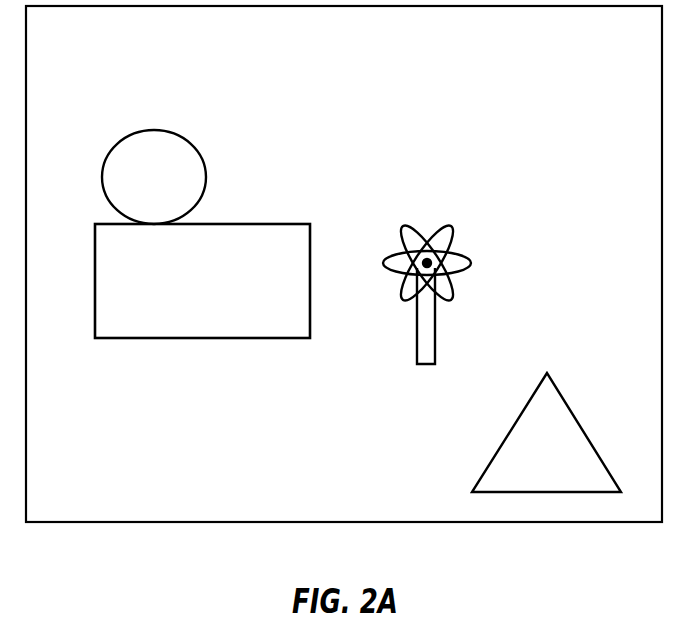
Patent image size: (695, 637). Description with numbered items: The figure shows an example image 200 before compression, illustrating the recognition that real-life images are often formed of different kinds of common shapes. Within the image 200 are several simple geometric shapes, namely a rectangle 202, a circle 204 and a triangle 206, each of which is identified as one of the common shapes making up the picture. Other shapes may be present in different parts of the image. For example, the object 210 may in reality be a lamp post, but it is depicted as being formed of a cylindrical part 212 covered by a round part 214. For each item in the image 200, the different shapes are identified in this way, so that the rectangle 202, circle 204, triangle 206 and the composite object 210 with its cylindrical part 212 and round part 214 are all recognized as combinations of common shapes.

The image 200 is at (367, 60).
The rectangle 202 is at (142, 339).
The circle 204 is at (155, 129).
The triangle 206 is at (505, 433).
The object 210 is at (444, 279).
The cylindrical part 212 is at (415, 332).
The round part 214 is at (410, 230).